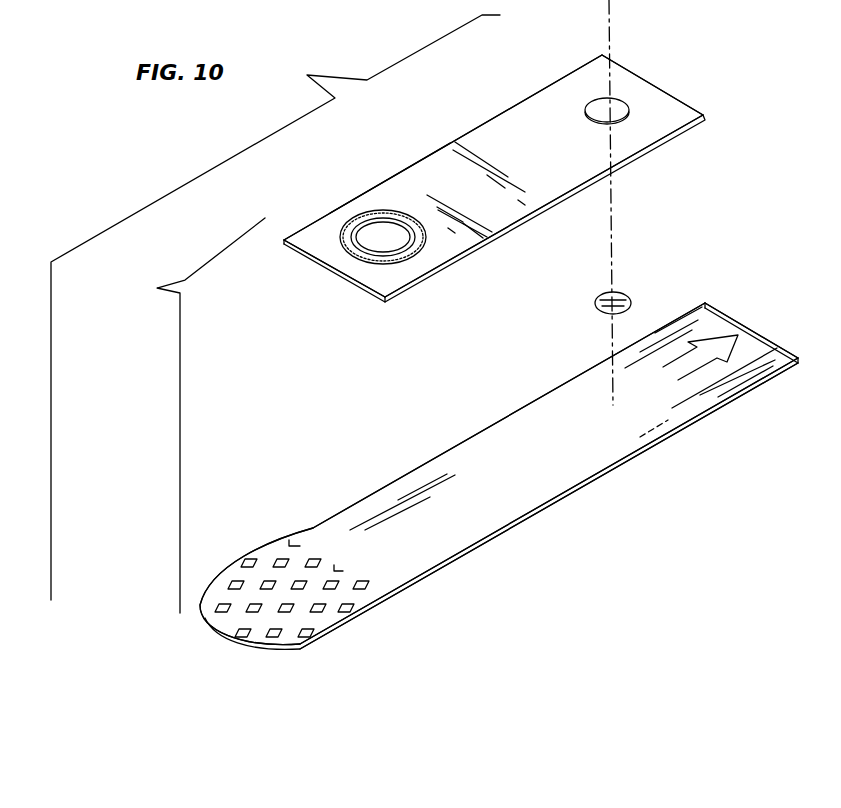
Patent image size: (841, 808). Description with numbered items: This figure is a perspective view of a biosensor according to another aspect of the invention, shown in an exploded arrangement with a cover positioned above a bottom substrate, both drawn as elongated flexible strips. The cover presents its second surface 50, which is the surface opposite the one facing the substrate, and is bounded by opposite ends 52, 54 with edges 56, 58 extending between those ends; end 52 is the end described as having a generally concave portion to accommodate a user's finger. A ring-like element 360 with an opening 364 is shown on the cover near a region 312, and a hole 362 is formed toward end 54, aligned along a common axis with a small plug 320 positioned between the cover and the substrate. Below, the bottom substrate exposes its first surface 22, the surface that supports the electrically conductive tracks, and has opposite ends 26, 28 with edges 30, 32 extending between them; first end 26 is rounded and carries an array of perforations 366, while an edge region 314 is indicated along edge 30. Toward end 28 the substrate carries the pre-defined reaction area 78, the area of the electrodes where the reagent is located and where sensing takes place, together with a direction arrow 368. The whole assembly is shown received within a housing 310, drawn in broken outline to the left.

The housing 310 is at (275, 314).
The second surface 50 is at (553, 161).
The end 52 is at (360, 287).
The end 54 is at (660, 87).
The edge 56 is at (582, 190).
The edge 58 is at (482, 125).
The plate surface 312 is at (388, 180).
The hole 362 is at (617, 97).
The grommet ring 360 is at (366, 222).
The grommet opening 364 is at (415, 253).
The plug 320 is at (633, 290).
The first surface 22 is at (485, 465).
The first end 26 is at (215, 635).
The end 28 is at (725, 315).
The edge 30 is at (547, 510).
The strip edge 314 is at (458, 566).
The edge 32 is at (318, 518).
The direction arrow 368 is at (744, 343).
The reaction area 78 is at (628, 407).
The perforations 366 is at (330, 585).